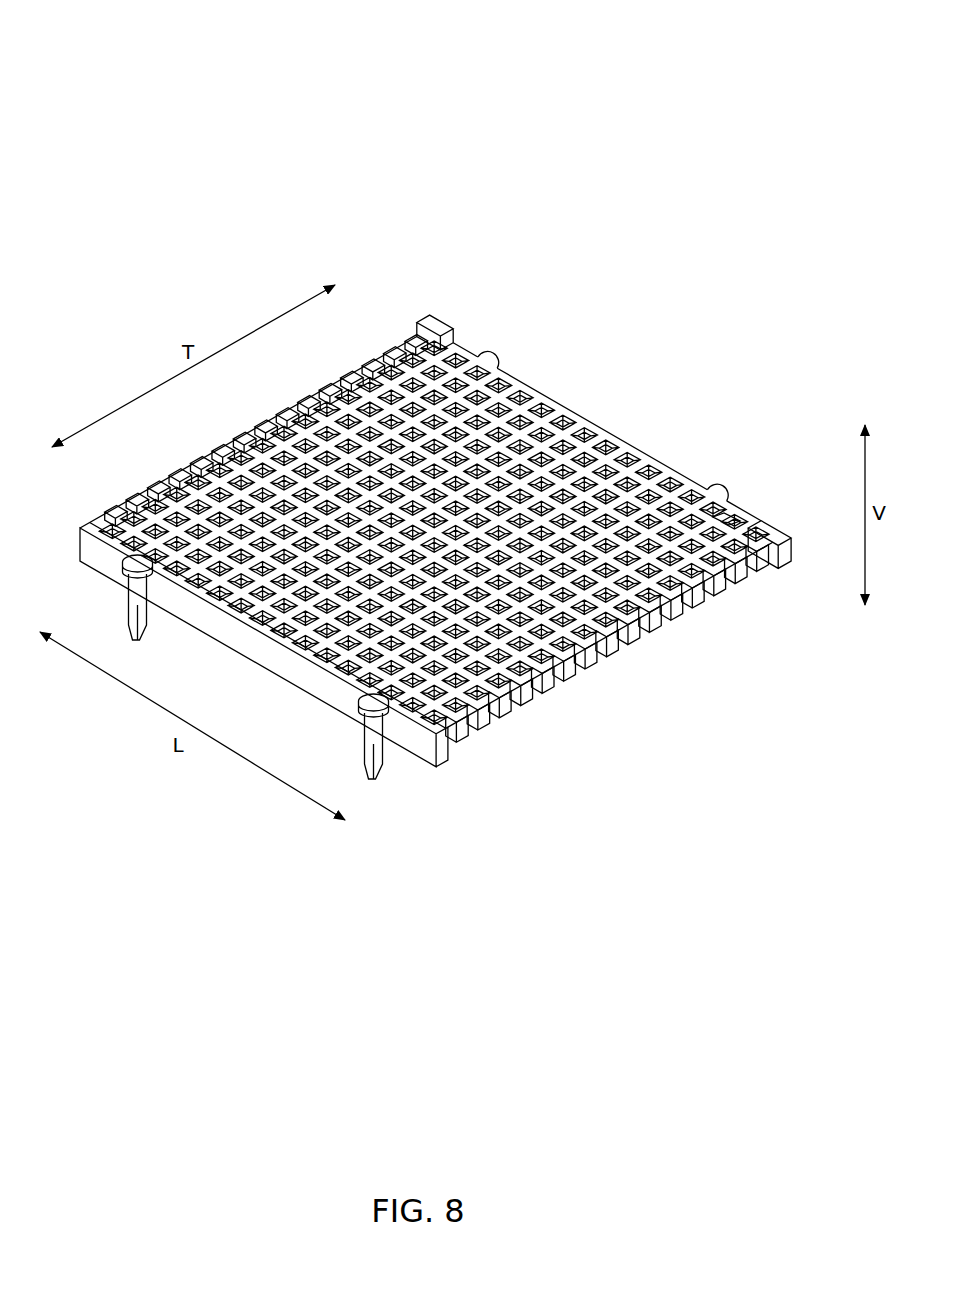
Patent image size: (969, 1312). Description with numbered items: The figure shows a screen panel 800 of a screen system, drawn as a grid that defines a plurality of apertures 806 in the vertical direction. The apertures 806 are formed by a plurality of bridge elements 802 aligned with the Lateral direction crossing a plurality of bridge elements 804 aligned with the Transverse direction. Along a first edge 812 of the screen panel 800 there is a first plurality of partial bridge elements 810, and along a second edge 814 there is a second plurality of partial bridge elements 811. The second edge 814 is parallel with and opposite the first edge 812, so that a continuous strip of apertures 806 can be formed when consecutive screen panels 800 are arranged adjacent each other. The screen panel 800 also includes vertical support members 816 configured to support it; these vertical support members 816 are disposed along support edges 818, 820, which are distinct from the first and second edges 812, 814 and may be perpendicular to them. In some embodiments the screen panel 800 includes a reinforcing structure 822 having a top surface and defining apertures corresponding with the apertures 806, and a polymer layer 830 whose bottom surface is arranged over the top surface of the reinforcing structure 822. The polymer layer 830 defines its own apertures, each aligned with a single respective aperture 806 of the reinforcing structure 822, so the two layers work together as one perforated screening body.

The screen panel 800 is at (241, 86).
The bridge elements 802 is at (389, 343).
The bridge elements 804 is at (446, 342).
The apertures 806 is at (753, 526).
The first plurality of partial bridge elements 810 is at (752, 576).
The second plurality of partial bridge elements 811 is at (280, 411).
The first edge 812 is at (614, 682).
The second edge 814 is at (188, 458).
The vertical support members 816 is at (485, 356).
The support edge 818 is at (598, 418).
The support edge 820 is at (267, 660).
The reinforcing structure 822 is at (586, 692).
The polymer layer 830 is at (553, 700).